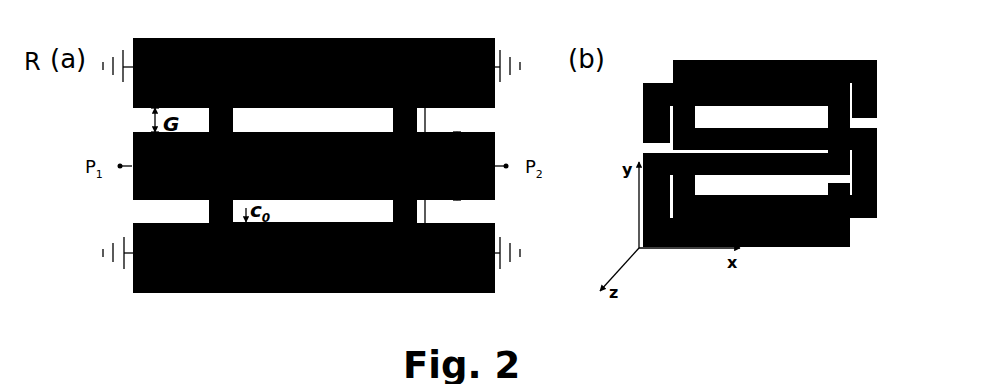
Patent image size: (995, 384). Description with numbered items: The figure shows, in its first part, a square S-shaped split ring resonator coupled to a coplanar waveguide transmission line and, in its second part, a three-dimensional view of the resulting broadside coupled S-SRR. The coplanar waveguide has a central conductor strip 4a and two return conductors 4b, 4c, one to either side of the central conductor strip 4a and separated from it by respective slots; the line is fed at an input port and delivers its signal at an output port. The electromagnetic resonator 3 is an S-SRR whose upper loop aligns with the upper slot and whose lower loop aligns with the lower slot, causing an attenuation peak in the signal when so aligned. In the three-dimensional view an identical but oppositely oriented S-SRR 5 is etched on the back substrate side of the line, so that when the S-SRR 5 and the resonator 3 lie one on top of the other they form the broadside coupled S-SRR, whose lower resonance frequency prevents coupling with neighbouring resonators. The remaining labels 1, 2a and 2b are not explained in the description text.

The filter device 1 is at (708, 371).
The first substrate layer 2a is at (309, 371).
The second substrate layer 2b is at (572, 371).
The electromagnetic resonator 3 is at (213, 254).
The central conductor strip 4a is at (480, 143).
The return conductor 4b is at (443, 60).
The return conductor 4c is at (473, 277).
The S-SRR 5 is at (807, 250).